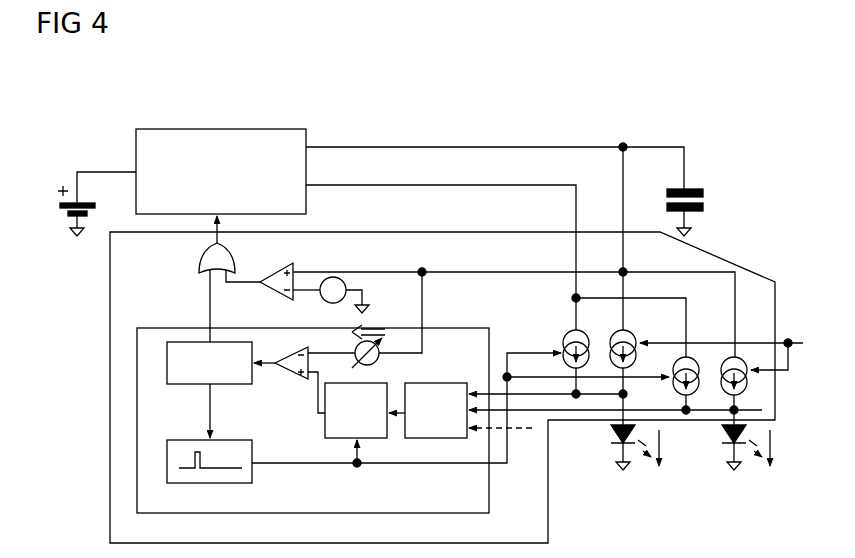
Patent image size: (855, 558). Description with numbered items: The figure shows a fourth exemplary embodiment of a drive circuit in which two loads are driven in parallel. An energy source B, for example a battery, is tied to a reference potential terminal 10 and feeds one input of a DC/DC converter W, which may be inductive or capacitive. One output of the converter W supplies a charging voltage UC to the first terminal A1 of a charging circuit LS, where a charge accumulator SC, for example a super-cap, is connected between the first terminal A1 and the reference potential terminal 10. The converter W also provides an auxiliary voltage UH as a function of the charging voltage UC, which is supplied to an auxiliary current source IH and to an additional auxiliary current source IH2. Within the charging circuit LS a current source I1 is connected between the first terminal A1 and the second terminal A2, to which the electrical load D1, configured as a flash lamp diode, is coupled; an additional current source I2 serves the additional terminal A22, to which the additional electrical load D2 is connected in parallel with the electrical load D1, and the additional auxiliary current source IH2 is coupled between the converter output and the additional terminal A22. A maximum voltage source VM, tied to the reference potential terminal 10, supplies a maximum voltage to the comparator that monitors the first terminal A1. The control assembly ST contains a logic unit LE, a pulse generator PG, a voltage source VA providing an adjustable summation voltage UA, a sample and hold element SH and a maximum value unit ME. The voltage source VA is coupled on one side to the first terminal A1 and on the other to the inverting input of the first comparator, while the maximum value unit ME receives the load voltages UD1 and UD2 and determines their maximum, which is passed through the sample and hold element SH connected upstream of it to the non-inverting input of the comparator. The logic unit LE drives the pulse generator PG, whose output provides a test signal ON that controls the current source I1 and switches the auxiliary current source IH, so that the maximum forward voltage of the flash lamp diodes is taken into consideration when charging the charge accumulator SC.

The DC/DC converter W is at (268, 128).
The energy source B is at (56, 207).
The reference potential terminal 10 is at (73, 240).
The charging voltage UC is at (556, 141).
The auxiliary voltage UH is at (506, 181).
The charge accumulator SC is at (703, 188).
The first terminal A1 is at (625, 270).
The charging circuit LS is at (775, 298).
The control assembly ST is at (163, 327).
The maximum voltage source VM is at (314, 292).
The adjustable summation voltage UA is at (368, 330).
The voltage source VA is at (338, 342).
The auxiliary current source IH is at (565, 341).
The current source I1 is at (635, 340).
The additional auxiliary current source IH2 is at (692, 350).
The additional current source I2 is at (742, 352).
The logic unit LE is at (172, 386).
The maximum value unit ME is at (441, 383).
The sample and hold element SH is at (325, 424).
The test signal ON is at (460, 410).
The pulse generator PG is at (252, 480).
The second terminal A2 is at (627, 394).
The additional terminal A22 is at (762, 410).
The load voltage UD1 is at (681, 448).
The load voltage UD2 is at (792, 448).
The electrical load D1 is at (612, 434).
The additional electrical load D2 is at (723, 434).